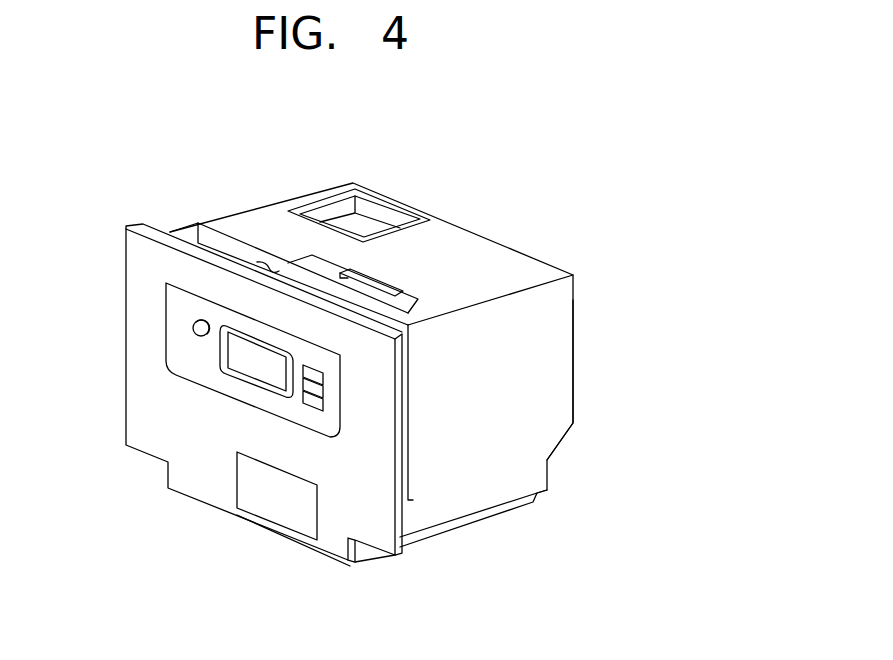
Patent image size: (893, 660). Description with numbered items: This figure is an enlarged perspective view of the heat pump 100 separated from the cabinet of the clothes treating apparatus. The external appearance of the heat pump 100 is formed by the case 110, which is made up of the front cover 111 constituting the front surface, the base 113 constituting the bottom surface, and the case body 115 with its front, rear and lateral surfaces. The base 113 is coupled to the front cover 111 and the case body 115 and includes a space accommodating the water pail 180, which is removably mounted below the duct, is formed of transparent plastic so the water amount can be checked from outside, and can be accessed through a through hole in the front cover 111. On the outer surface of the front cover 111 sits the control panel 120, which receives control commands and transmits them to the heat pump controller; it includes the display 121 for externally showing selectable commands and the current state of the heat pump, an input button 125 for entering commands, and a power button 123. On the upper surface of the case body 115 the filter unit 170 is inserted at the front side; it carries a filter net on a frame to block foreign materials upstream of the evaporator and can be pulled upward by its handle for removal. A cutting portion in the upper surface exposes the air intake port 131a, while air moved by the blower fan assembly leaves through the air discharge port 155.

The heat pump 100 is at (595, 215).
The case 110 is at (595, 600).
The front cover 111 is at (388, 533).
The base 113 is at (470, 520).
The case body 115 is at (558, 425).
The control panel 120 is at (183, 329).
The display 121 is at (232, 357).
The power button 123 is at (196, 326).
The input button 125 is at (307, 378).
The air intake port 131a is at (268, 260).
The air discharge port 155 is at (365, 226).
The filter unit 170 is at (413, 303).
The water pail 180 is at (277, 494).